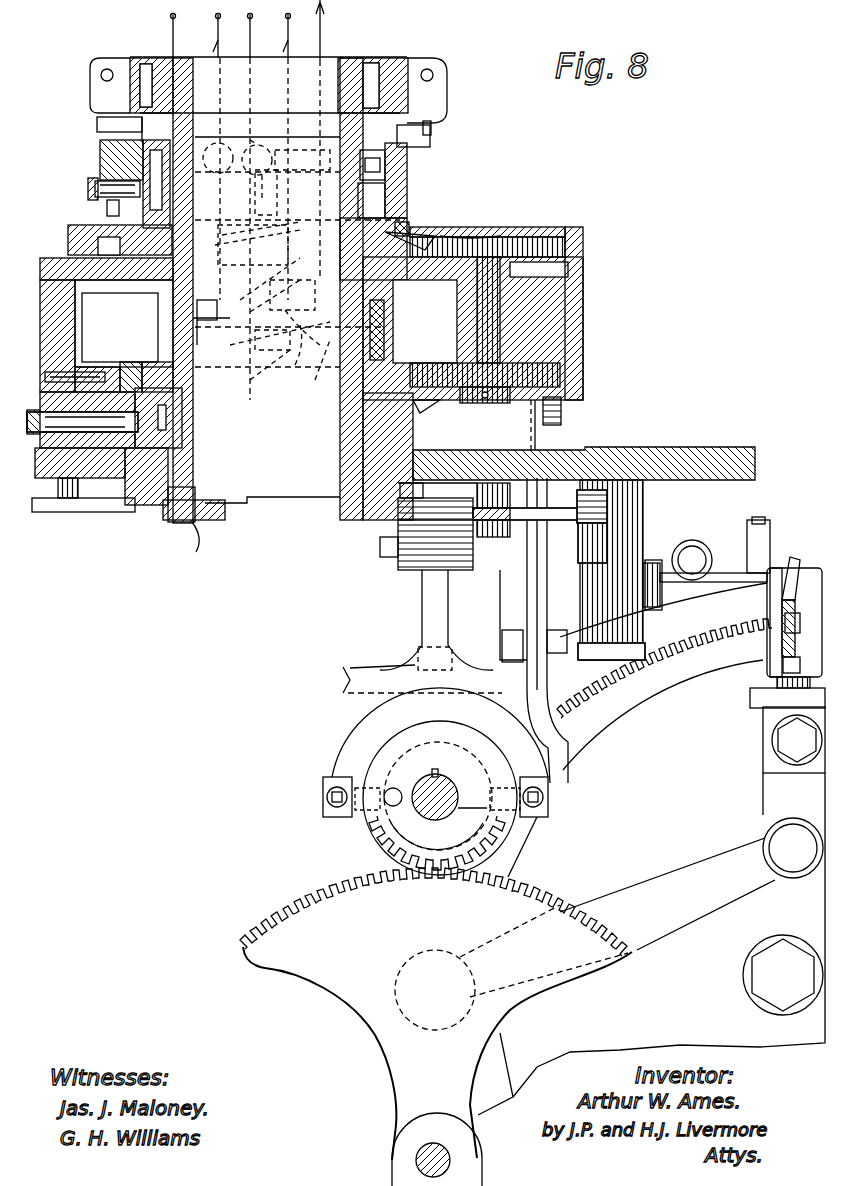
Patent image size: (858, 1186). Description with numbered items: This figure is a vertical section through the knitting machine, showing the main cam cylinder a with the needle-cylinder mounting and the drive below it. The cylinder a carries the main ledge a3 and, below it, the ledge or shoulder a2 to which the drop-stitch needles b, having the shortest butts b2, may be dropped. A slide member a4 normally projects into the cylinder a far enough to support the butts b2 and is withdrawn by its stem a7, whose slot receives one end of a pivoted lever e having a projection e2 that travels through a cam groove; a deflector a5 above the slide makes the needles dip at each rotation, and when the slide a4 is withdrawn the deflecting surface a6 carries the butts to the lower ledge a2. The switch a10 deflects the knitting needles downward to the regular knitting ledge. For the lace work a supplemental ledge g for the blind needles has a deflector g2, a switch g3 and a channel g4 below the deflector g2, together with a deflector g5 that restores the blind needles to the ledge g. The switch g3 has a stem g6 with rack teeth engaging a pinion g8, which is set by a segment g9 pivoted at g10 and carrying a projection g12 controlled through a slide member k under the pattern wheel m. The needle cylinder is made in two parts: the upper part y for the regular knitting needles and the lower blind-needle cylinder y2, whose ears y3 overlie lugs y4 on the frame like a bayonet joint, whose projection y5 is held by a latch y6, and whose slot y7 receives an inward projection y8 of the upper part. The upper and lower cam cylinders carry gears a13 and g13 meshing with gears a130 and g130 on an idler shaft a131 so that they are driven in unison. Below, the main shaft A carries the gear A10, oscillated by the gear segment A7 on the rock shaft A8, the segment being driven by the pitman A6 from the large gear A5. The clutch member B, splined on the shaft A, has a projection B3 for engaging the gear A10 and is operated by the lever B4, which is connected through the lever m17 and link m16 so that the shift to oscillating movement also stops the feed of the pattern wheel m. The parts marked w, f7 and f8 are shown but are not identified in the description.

The main cam cylinder a is at (400, 146).
The lower ledge a2 is at (425, 235).
The main ledge a3 is at (405, 172).
The slide member a4 is at (160, 183).
The deflector a5 is at (122, 160).
The deflecting surface a6 is at (165, 205).
The stem a7 is at (88, 195).
The switch a10 is at (264, 197).
The gear a13 is at (470, 235).
The gear a130 is at (575, 230).
The idler shaft a131 is at (512, 301).
The drop-stitch needles b is at (147, 75).
The butts b2 is at (408, 226).
The pivoted lever e is at (100, 188).
The projection e2 is at (107, 208).
The upper needle cylinder part y is at (135, 115).
The blind needle cylinder y2 is at (212, 380).
The ears y3 is at (125, 466).
The lugs y4 is at (170, 522).
The projection y5 is at (108, 512).
The latch y6 is at (70, 512).
The slot y7 is at (215, 150).
The inward projection y8 is at (230, 155).
The pattern wheel w is at (253, 245).
The slide member k is at (175, 318).
The supplemental ledge g is at (160, 365).
The deflector g2 is at (306, 365).
The switch g3 is at (270, 376).
The channel g4 is at (322, 379).
The deflector g5 is at (386, 314).
The stem g6 is at (277, 336).
The pinion g8 is at (302, 314).
The segment g9 is at (286, 294).
The pivot g10 is at (270, 282).
The projection g12 is at (257, 238).
The gear g13 is at (420, 403).
The gear g130 is at (560, 372).
The pattern wheel m is at (669, 807).
The link m16 is at (558, 415).
The lever m17 is at (592, 582).
The piston cylinder f7 is at (477, 530).
The cylinder f8 is at (592, 540).
The main shaft A is at (438, 796).
The large gear A5 is at (555, 730).
The pitman A6 is at (667, 894).
The gear segment A7 is at (436, 1014).
The rock shaft A8 is at (416, 1158).
The gear A10 is at (395, 860).
The clutch member B is at (440, 737).
The projection B3 is at (385, 805).
The lever B4 is at (425, 637).